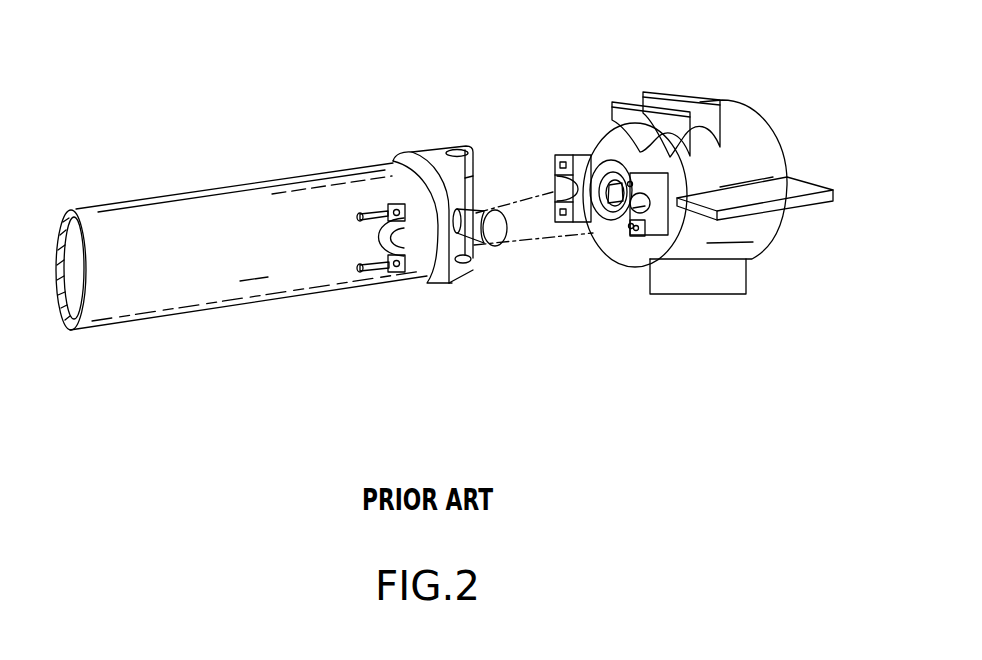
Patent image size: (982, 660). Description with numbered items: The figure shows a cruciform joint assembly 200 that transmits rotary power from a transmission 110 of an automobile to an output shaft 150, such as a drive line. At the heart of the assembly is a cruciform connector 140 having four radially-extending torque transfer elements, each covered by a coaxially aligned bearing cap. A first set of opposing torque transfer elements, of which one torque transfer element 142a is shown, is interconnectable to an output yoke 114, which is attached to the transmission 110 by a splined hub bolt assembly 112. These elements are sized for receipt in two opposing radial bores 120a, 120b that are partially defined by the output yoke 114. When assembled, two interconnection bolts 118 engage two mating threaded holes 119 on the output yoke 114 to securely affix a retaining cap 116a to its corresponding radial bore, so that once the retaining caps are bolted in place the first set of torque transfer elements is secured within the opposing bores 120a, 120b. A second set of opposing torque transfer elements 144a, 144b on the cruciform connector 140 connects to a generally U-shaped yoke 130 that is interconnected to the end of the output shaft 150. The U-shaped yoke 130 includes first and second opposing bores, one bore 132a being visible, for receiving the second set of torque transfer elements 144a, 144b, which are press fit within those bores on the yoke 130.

The transmission 110 is at (743, 127).
The splined hub bolt assembly 112 is at (591, 220).
The output yoke 114 is at (650, 231).
The retaining cap 116a is at (397, 272).
The interconnection bolts 118 is at (358, 218).
The threaded holes 119 is at (630, 183).
The radial bore 120a is at (643, 208).
The radial bore 120b is at (555, 183).
The U-shaped yoke 130 is at (398, 148).
The bore 132a is at (453, 149).
The cruciform connector 140 is at (462, 231).
The torque transfer element 142a is at (497, 233).
The torque transfer element 144a is at (470, 176).
The torque transfer element 144b is at (467, 265).
The output shaft 150 is at (140, 320).
The cruciform joint assembly 200 is at (600, 48).